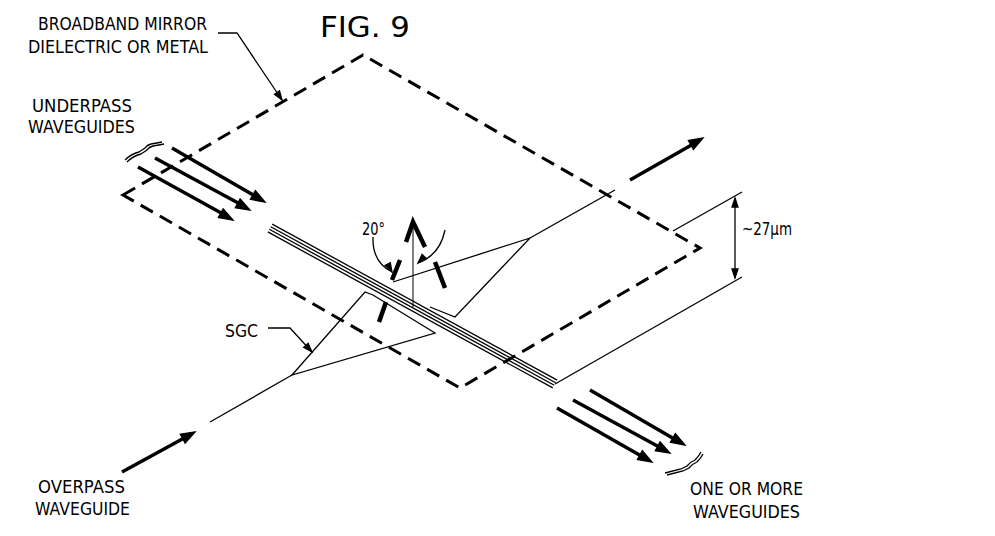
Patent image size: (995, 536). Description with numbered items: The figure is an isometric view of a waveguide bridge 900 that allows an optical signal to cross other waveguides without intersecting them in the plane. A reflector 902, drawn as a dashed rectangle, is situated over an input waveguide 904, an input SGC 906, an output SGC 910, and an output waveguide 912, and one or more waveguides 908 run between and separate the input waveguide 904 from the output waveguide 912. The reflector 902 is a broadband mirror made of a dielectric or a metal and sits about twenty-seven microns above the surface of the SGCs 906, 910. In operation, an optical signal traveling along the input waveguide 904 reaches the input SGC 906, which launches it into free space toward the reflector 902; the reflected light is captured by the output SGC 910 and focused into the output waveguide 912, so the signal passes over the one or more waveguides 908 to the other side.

The waveguide bridge 900 is at (613, 95).
The reflector 902 is at (482, 122).
The input waveguide 904 is at (253, 402).
The input SGC 906 is at (343, 355).
The one or more waveguides 908 is at (528, 380).
The output SGC 910 is at (493, 273).
The output waveguide 912 is at (573, 213).